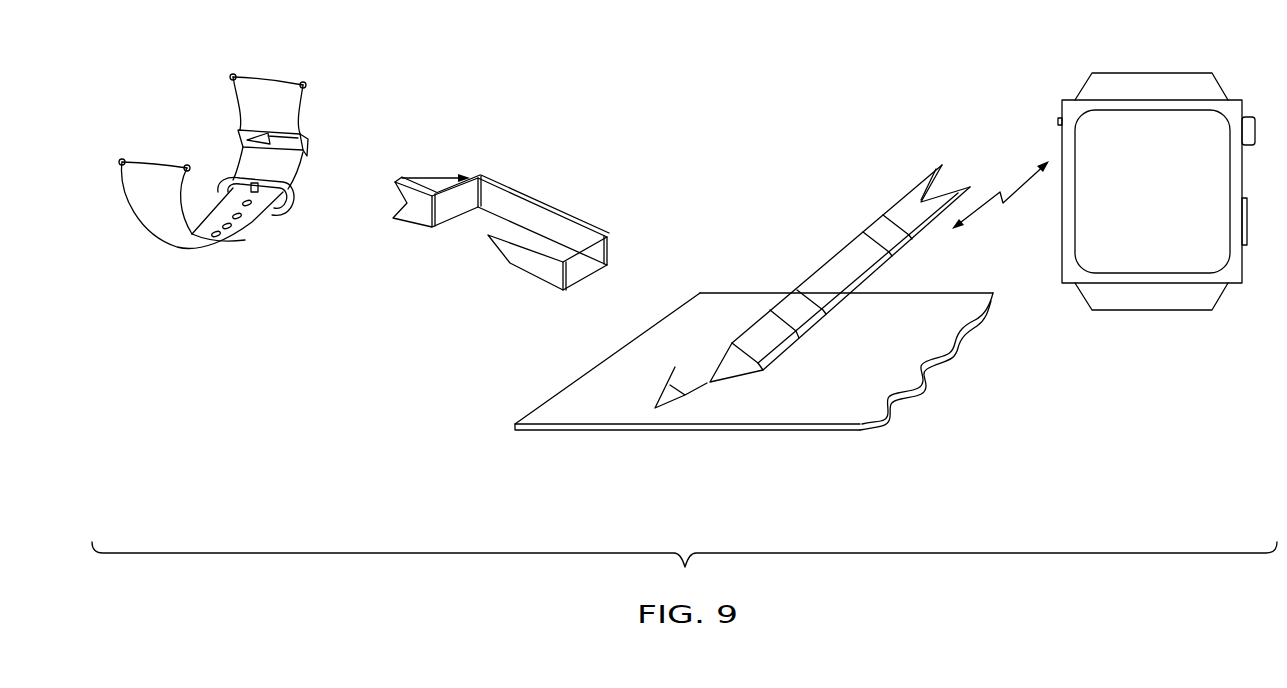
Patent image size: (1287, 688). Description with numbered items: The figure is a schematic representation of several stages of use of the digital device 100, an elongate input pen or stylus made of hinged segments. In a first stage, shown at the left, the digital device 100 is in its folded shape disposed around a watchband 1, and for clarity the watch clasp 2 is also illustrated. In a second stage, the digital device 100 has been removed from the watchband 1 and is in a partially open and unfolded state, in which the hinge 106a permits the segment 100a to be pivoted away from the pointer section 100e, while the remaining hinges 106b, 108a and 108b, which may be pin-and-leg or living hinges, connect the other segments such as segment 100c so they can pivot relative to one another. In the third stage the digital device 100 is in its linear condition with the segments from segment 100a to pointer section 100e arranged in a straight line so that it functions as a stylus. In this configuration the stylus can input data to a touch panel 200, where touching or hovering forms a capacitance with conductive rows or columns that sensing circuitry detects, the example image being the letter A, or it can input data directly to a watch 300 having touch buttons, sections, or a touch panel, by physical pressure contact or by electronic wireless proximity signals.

The digital device 100 is at (544, 228).
The segment 100a is at (398, 214).
The segment 100c is at (543, 206).
The pointer section 100e is at (533, 278).
The hinge 106a is at (433, 229).
The hinge 106b is at (478, 177).
The hinge 108a is at (607, 237).
The hinge 108b is at (563, 291).
The watchband 1 is at (300, 189).
The watch clasp 2 is at (280, 218).
The touch panel 200 is at (793, 410).
The watch 300 is at (1034, 101).